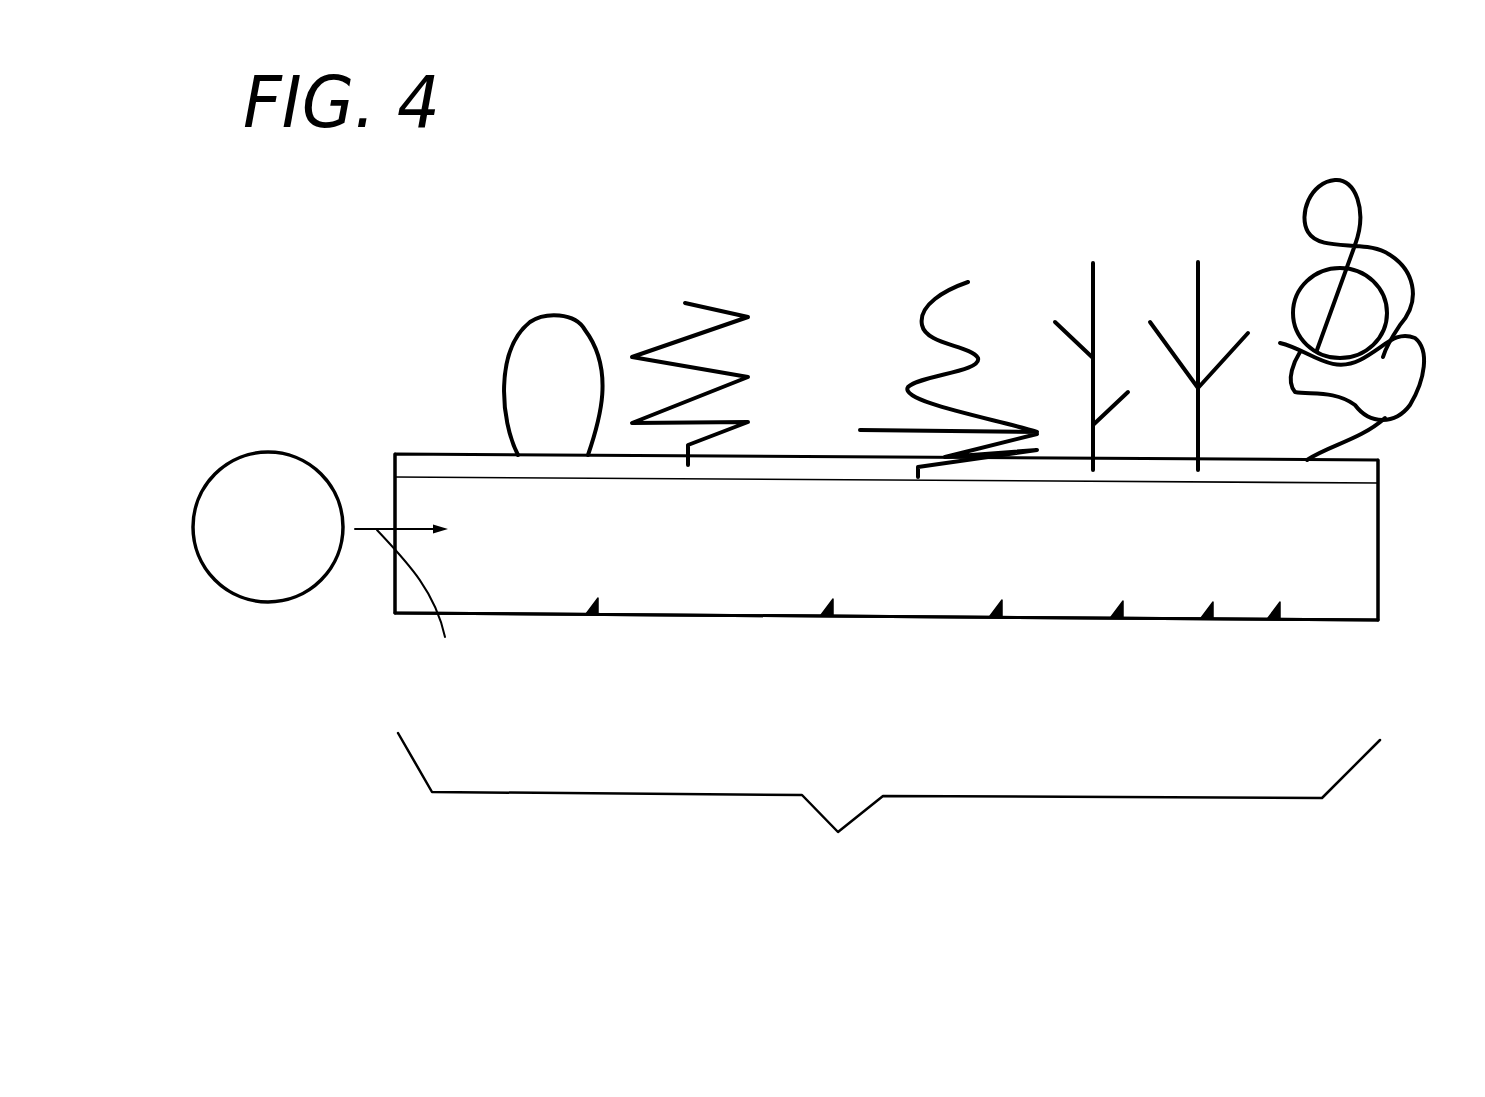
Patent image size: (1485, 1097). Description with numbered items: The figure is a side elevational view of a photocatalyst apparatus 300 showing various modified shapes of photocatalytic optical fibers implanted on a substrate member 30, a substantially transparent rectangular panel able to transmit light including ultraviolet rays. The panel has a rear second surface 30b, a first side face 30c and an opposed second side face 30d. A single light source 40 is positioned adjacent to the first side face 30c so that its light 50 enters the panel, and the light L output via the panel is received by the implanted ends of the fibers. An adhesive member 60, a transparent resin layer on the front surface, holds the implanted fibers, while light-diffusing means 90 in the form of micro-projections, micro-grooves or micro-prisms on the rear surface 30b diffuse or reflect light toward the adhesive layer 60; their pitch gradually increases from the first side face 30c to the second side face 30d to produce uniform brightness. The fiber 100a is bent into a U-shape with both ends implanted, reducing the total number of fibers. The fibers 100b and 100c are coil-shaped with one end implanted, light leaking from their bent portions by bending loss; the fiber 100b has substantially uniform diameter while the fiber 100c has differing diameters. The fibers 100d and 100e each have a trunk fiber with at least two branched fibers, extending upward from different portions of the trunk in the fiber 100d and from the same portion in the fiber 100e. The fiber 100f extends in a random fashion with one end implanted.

The substrate member 30 is at (757, 538).
The second surface 30b is at (938, 615).
The first side face 30c is at (393, 500).
The second side face 30d is at (1378, 543).
The light source 40 is at (267, 558).
The light beam 50 is at (213, 615).
The adhesive member 60 is at (473, 462).
The light-diffusing means 90 is at (590, 625).
The photocatalytic optical fiber having a U-shape 100a is at (553, 318).
The photocatalytic optical fiber having a coil-shape 100b is at (684, 298).
The photocatalytic optical fiber having a coil-shape 100c is at (967, 280).
The photocatalytic optical fiber having a trunk optical fiber and branched optical f 100d is at (1092, 263).
The photocatalytic optical fiber having a trunk optical fiber and branched optical f 100e is at (1197, 262).
The photocatalytic optical fiber having a random-shape 100f is at (1356, 176).
The photocatalyst apparatus 300 is at (889, 817).
The light L is at (416, 616).